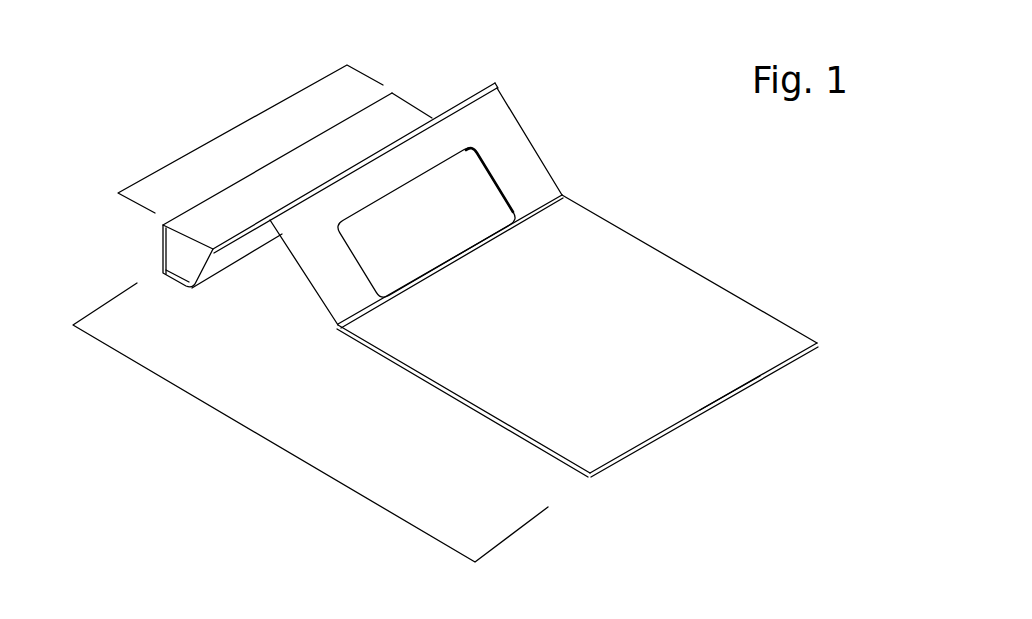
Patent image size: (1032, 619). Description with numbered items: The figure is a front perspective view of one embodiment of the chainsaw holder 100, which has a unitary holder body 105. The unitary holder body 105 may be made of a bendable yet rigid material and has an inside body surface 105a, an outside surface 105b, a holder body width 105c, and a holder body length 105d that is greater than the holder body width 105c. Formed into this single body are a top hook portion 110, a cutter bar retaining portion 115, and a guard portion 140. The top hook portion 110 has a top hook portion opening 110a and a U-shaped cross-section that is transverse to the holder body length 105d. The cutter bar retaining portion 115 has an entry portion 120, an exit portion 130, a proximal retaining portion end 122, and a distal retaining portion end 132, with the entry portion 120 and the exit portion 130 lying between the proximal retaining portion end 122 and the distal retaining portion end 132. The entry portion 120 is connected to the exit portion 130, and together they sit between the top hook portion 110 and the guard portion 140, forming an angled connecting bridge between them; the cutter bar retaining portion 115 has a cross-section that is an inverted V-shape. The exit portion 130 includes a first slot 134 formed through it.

The chainsaw holder 100 is at (466, 291).
The unitary holder body 105 is at (477, 298).
The inside body surface 105a is at (638, 450).
The outside surface 105b is at (703, 315).
The holder body width 105c is at (240, 125).
The holder body length 105d is at (223, 412).
The top hook portion 110 is at (242, 228).
The top hook portion opening 110a is at (200, 268).
The cutter bar retaining portion 115 is at (554, 114).
The entry portion 120 is at (253, 226).
The proximal retaining portion end 122 is at (211, 233).
The exit portion 130 is at (525, 160).
The distal retaining portion end 132 is at (340, 330).
The first slot 134 is at (460, 213).
The guard portion 140 is at (730, 397).